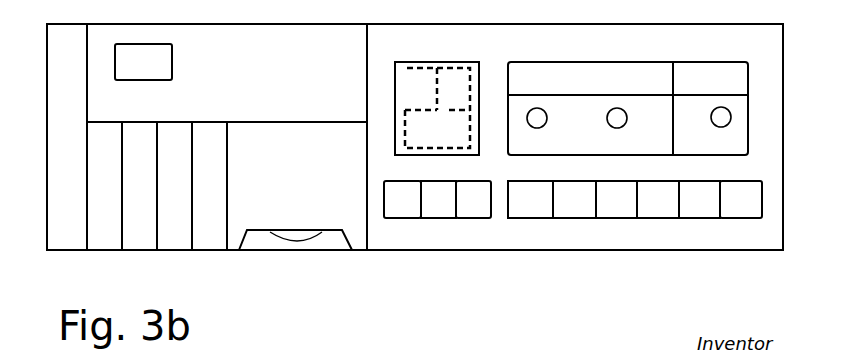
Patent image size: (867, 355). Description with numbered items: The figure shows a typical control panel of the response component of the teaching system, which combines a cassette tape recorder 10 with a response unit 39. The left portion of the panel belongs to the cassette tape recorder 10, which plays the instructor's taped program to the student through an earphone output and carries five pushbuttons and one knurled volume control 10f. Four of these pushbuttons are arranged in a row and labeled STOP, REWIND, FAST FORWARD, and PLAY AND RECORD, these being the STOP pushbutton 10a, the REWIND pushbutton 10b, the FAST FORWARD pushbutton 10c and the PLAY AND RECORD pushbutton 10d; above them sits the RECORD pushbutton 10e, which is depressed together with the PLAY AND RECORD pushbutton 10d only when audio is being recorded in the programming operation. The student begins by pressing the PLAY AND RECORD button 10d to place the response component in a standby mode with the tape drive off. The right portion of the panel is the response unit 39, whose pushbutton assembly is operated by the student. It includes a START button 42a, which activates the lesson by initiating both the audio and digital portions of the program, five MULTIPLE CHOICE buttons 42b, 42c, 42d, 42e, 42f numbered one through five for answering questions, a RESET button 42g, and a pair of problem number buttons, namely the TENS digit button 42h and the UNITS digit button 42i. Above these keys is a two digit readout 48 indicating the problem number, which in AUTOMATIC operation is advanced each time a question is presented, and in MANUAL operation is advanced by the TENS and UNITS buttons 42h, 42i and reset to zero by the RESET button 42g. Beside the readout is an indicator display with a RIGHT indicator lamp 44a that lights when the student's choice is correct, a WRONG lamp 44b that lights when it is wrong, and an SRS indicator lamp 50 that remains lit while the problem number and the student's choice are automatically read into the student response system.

The cassette tape recorder 10 is at (323, 104).
The STOP pushbutton 10a is at (86, 209).
The REWIND pushbutton 10b is at (147, 240).
The FAST FORWARD pushbutton 10c is at (183, 250).
The PLAY AND RECORD pushbutton 10d is at (212, 240).
The RECORD pushbutton 10e is at (172, 68).
The knurled volume control 10f is at (298, 250).
The response unit 39 is at (690, 54).
The START button 42a is at (753, 216).
The MULTIPLE CHOICE button 42b is at (538, 210).
The MULTIPLE CHOICE button 42c is at (583, 210).
The MULTIPLE CHOICE button 42d is at (628, 208).
The MULTIPLE CHOICE button 42e is at (667, 210).
The MULTIPLE CHOICE button 42f is at (707, 210).
The RESET button 42g is at (436, 210).
The problem number TENS digit button 42h is at (402, 210).
The problem number UNITS digit button 42i is at (467, 210).
The RIGHT indicator lamp 44a is at (537, 128).
The WRONG lamp 44b is at (617, 128).
The two digit readout 48 is at (440, 61).
The SRS indicator lamp 50 is at (722, 127).